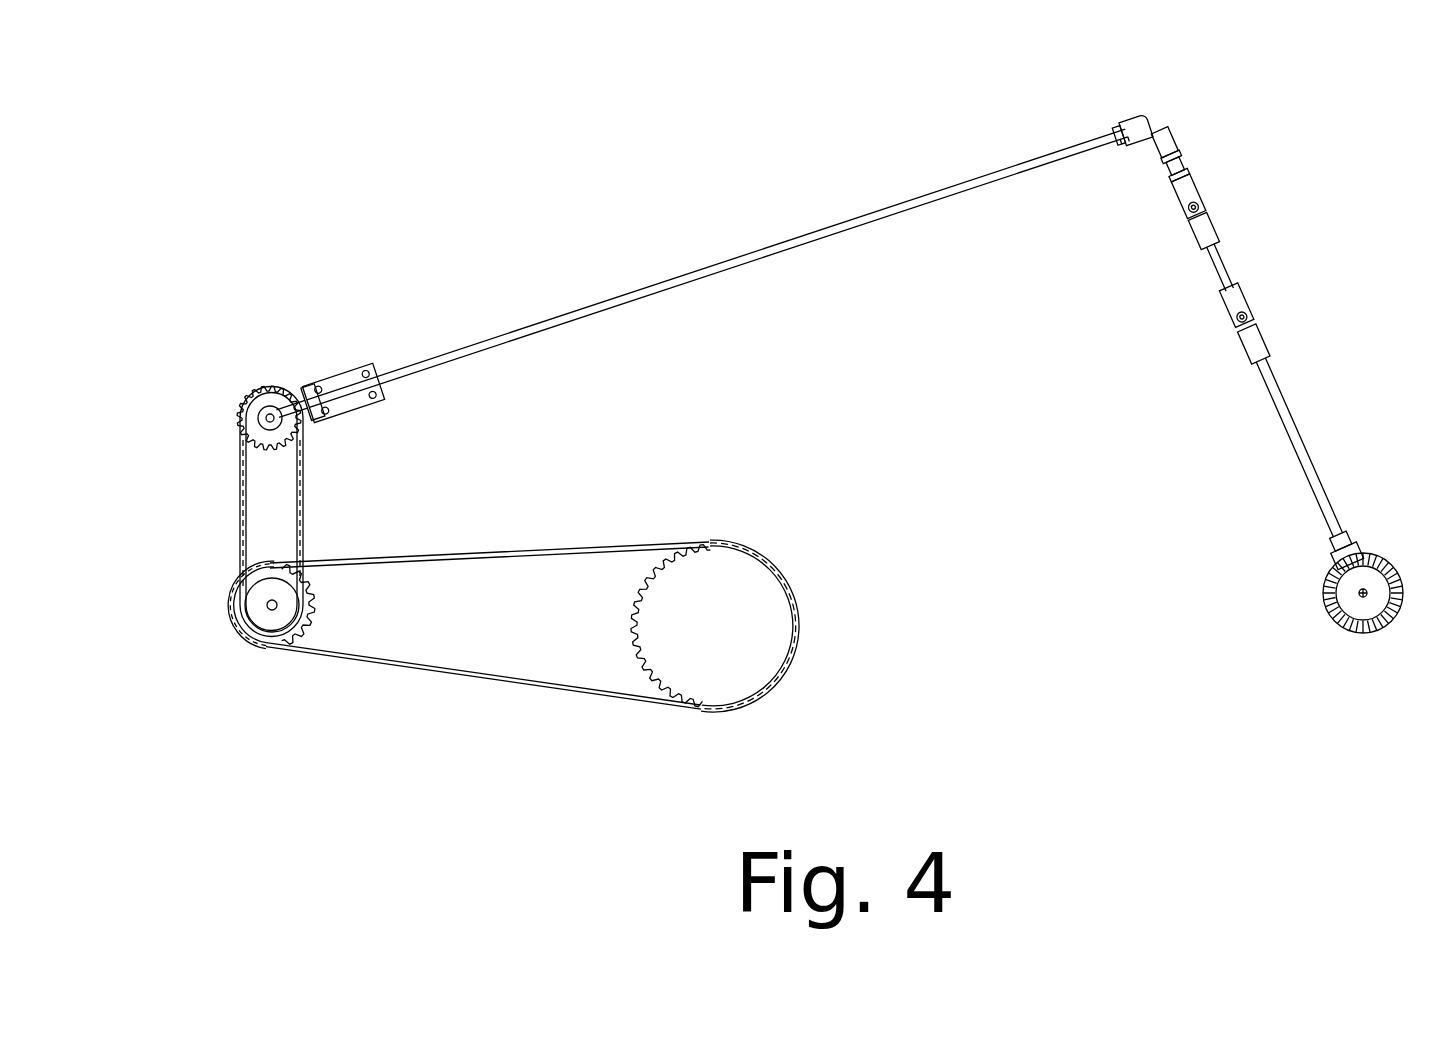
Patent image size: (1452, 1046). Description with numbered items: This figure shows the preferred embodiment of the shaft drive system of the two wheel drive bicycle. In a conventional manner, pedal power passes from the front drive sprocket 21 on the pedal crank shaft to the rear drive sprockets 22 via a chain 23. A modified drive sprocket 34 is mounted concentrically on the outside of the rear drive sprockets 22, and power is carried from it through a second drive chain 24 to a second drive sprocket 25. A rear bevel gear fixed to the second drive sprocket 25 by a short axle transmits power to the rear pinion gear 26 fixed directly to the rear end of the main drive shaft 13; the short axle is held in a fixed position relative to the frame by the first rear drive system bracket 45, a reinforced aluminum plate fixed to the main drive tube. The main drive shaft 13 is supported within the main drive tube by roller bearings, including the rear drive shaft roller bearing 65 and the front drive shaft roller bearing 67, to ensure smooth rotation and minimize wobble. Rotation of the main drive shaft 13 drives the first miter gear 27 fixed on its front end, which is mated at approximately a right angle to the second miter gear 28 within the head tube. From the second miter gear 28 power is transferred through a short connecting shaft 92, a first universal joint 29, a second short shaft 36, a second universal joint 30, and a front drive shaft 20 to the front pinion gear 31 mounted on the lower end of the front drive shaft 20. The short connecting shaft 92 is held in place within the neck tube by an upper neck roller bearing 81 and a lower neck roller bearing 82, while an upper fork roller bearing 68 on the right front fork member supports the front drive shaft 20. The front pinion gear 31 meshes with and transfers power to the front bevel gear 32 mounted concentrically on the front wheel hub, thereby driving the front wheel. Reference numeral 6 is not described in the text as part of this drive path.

The coupling 6 is at (1348, 548).
The main drive shaft 13 is at (765, 248).
The front drive shaft 20 is at (1308, 457).
The front drive sprocket 21 is at (637, 612).
The rear drive sprockets 22 is at (263, 645).
The chain 23 is at (425, 672).
The second drive chain 24 is at (305, 500).
The second drive sprocket 25 is at (243, 404).
The rear pinion gear 26 is at (300, 393).
The first miter gear 27 is at (1137, 124).
The second miter gear 28 is at (1173, 130).
The first universal joint 29 is at (1198, 206).
The second universal joint 30 is at (1248, 323).
The front pinion gear 31 is at (1332, 553).
The front bevel gear 32 is at (1323, 591).
The modified drive sprocket 34 is at (232, 597).
The second short shaft 36 is at (1223, 267).
The first rear drive system bracket 45 is at (362, 410).
The rear drive shaft roller bearing 65 is at (317, 422).
The front drive shaft roller bearing 67 is at (1130, 142).
The upper fork roller bearing 68 is at (1262, 350).
The upper neck roller bearing 81 is at (1180, 152).
The lower neck roller bearing 82 is at (1186, 172).
The short connecting shaft 92 is at (1183, 160).